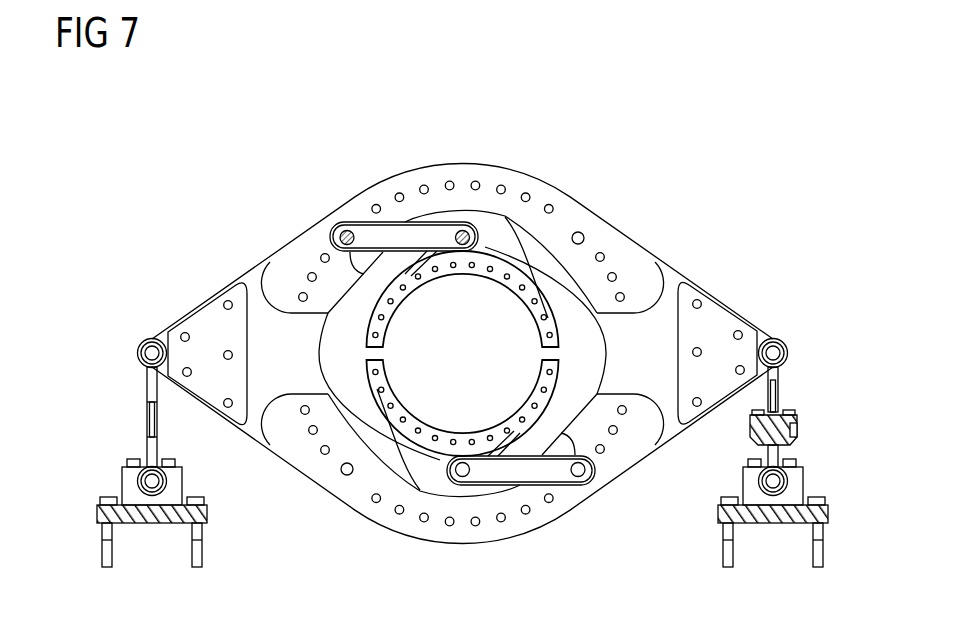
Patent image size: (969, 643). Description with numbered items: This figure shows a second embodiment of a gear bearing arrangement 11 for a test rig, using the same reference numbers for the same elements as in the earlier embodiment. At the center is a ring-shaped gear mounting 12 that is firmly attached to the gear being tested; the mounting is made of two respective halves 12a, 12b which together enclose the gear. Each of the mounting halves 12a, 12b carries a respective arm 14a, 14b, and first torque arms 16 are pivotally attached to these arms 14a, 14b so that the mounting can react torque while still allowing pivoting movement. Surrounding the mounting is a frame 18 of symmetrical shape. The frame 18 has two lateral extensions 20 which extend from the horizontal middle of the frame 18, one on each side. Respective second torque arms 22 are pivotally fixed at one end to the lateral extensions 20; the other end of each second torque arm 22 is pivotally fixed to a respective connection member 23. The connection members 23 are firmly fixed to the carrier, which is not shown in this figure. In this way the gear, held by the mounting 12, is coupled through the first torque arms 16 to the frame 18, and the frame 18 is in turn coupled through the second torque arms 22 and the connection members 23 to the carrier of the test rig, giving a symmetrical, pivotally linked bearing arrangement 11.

The gear bearing arrangement 11 is at (655, 101).
The ring-shaped gear mounting 12 is at (462, 355).
The mounting half 12a is at (440, 460).
The mounting half 12b is at (464, 254).
The arm 14a is at (460, 473).
The arm 14b is at (460, 222).
The first torque arm 16 is at (362, 232).
The frame 18 is at (638, 258).
The lateral extension 20 is at (203, 312).
The second torque arm 22 is at (146, 418).
The connection member 23 is at (122, 477).